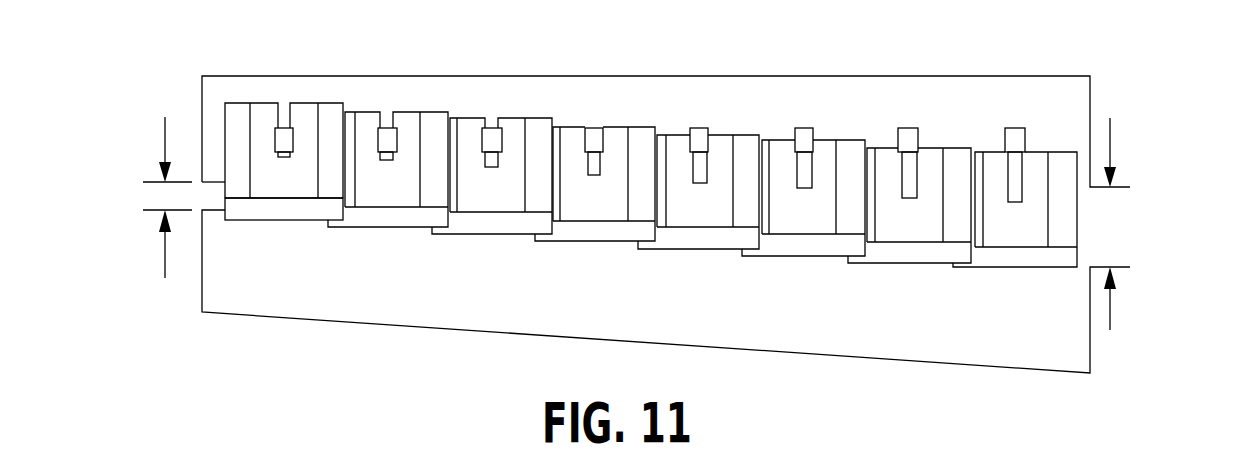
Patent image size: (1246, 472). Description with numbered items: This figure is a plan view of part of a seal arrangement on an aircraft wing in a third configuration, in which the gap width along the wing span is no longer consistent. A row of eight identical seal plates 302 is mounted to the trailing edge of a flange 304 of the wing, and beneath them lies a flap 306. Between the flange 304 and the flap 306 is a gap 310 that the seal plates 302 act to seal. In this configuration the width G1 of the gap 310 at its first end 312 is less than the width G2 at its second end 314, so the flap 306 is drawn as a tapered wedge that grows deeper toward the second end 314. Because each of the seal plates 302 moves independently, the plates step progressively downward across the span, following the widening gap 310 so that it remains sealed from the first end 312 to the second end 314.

The seal plate 302 is at (298, 115).
The flange 304 is at (692, 111).
The flap 306 is at (693, 303).
The gap 310 is at (213, 190).
The first end 312 is at (202, 290).
The second end 314 is at (1090, 347).
The gap width at first end G1 is at (150, 149).
The gap width at second end G2 is at (1126, 152).